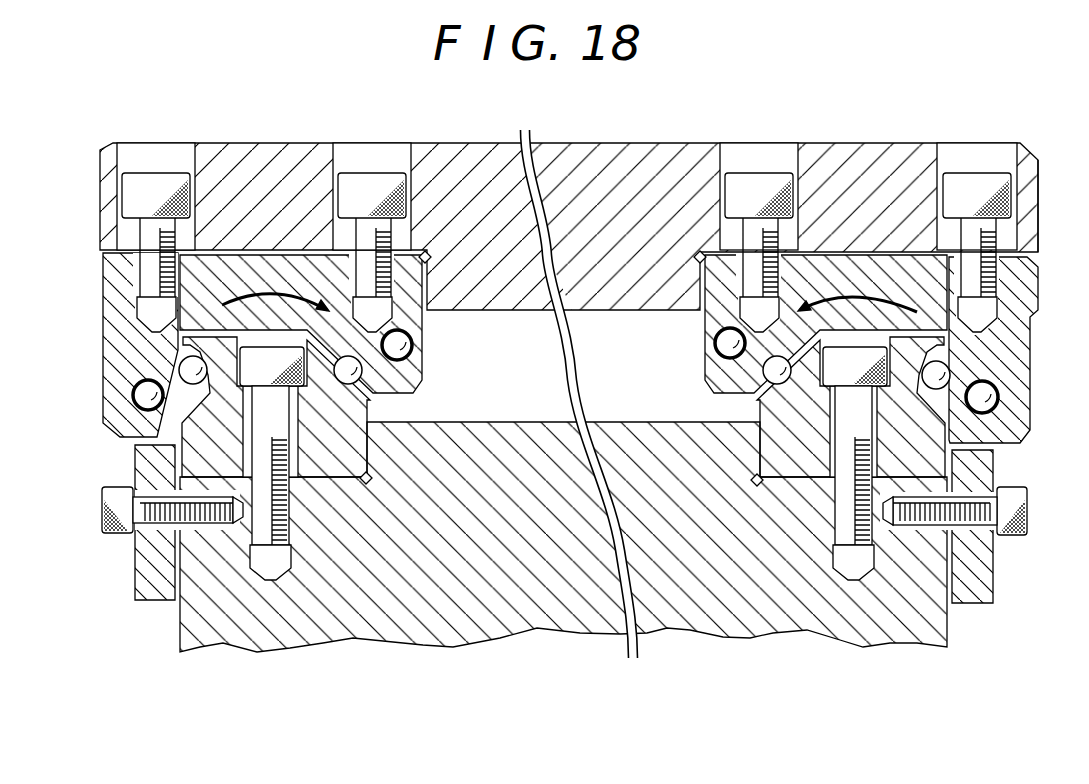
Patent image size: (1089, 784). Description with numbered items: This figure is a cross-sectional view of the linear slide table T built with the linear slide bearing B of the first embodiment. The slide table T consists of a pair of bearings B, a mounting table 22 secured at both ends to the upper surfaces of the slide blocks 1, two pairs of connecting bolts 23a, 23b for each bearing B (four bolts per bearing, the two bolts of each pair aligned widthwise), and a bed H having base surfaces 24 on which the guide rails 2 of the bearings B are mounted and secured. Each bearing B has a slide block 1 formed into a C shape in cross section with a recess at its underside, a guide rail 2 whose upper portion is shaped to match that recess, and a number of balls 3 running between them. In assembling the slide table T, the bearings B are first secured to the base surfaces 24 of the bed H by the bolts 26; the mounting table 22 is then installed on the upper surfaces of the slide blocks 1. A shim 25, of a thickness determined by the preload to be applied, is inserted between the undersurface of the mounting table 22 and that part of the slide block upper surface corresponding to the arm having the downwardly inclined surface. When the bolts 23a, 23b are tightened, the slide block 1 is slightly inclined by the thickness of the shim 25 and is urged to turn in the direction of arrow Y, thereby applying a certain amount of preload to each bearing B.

The slide block 1 is at (103, 347).
The guide rail 2 is at (110, 427).
The balls 3 is at (133, 384).
The mounting table 22 is at (836, 143).
The connecting bolt 23a is at (150, 170).
The connecting bolt 23b is at (372, 170).
The base surface 24 is at (347, 482).
The shim 25 is at (427, 250).
The bolt 26 is at (285, 578).
The linear slide bearing B is at (95, 288).
The bed H is at (172, 630).
The linear slide table T is at (1046, 157).
The direction of arrow Y is at (256, 288).